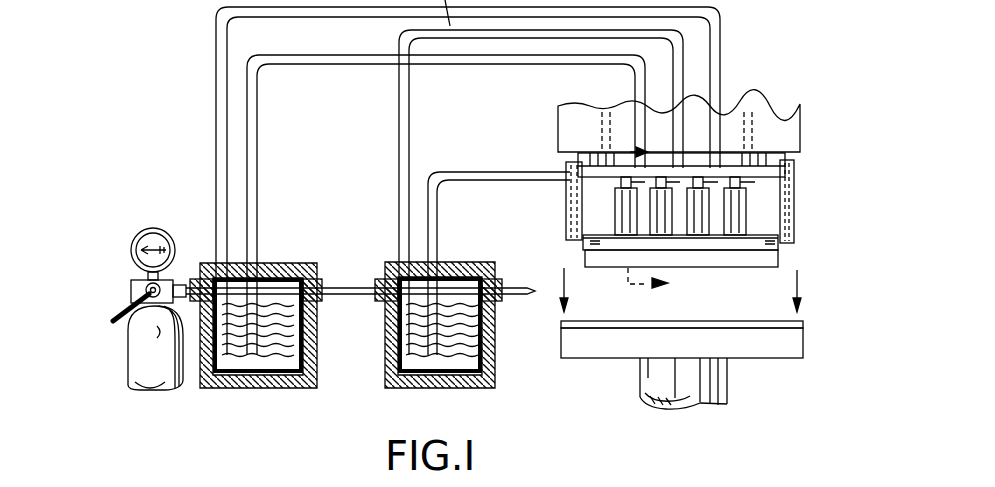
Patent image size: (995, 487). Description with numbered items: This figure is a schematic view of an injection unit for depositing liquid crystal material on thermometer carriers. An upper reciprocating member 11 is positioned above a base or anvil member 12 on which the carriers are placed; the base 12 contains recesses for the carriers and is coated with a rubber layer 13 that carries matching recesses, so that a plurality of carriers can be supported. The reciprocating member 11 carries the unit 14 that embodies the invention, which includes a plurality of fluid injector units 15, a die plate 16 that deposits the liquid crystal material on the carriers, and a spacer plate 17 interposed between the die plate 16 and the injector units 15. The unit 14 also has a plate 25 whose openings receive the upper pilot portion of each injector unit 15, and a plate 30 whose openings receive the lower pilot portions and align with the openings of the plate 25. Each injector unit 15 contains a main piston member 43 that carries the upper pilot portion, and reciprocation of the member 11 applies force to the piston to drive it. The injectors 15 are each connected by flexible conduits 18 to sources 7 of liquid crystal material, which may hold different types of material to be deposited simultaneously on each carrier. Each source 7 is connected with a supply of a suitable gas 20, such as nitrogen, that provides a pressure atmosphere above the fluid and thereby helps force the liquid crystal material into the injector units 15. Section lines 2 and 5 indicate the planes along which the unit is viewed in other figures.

The section line 2- 2 is at (658, 212).
The section line 5- 5 is at (680, 290).
The source of liquid crystal material 7 is at (300, 265).
The upper reciprocating member 11 is at (800, 107).
The base or anvil member 12 is at (803, 346).
The rubber layer 13 is at (803, 323).
The unit 14 is at (853, 182).
The fluid injector unit 15 is at (645, 213).
The die plate 16 is at (748, 263).
The spacer plate 17 is at (778, 250).
The flexible conduit 18 is at (355, 66).
The supply of gas 20 is at (133, 352).
The plate 25 is at (598, 165).
The plate 30 is at (612, 242).
The main piston member 43 is at (567, 202).